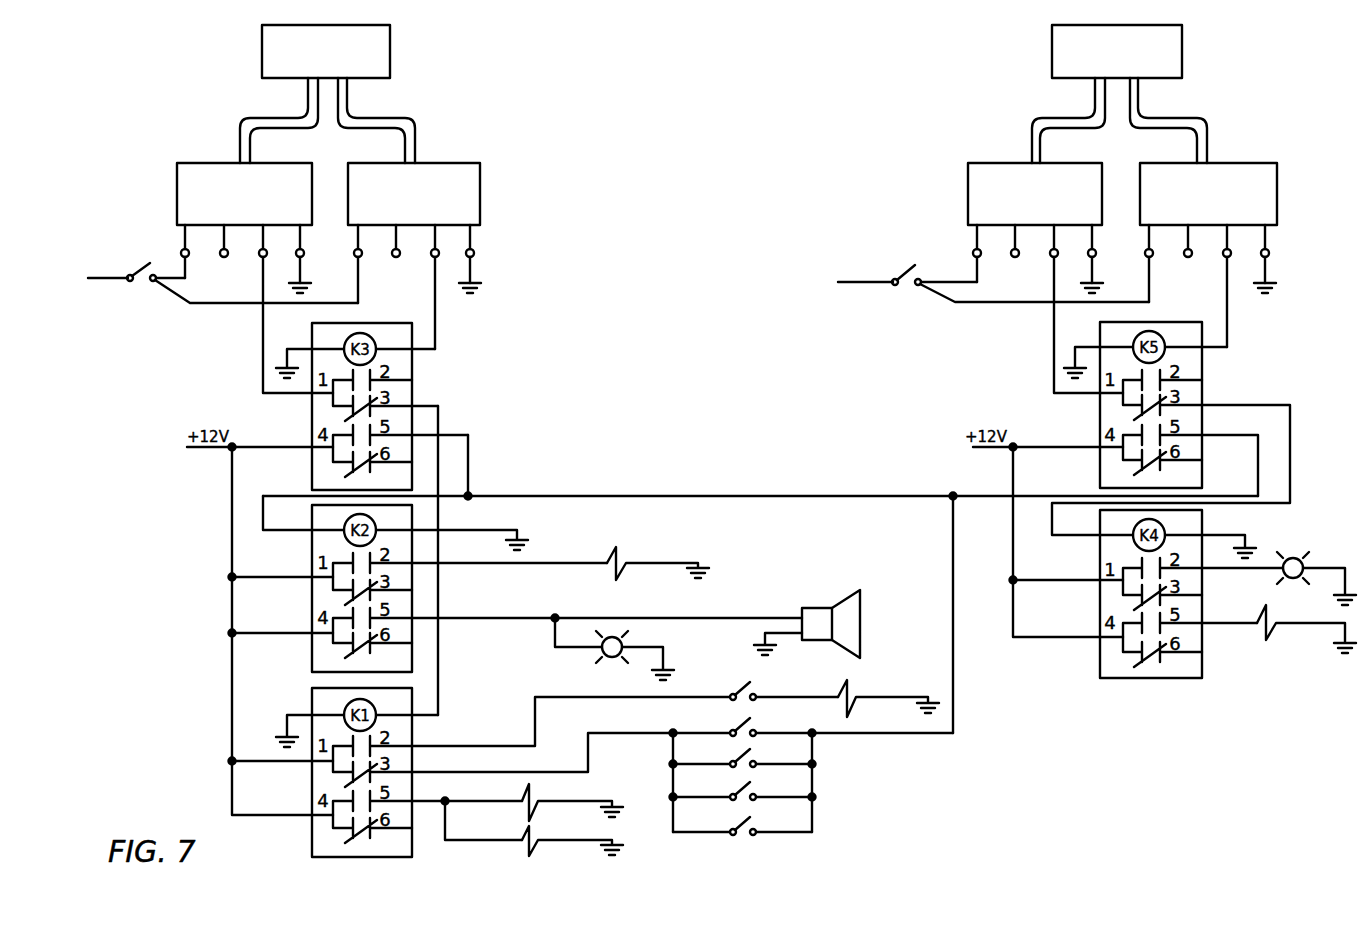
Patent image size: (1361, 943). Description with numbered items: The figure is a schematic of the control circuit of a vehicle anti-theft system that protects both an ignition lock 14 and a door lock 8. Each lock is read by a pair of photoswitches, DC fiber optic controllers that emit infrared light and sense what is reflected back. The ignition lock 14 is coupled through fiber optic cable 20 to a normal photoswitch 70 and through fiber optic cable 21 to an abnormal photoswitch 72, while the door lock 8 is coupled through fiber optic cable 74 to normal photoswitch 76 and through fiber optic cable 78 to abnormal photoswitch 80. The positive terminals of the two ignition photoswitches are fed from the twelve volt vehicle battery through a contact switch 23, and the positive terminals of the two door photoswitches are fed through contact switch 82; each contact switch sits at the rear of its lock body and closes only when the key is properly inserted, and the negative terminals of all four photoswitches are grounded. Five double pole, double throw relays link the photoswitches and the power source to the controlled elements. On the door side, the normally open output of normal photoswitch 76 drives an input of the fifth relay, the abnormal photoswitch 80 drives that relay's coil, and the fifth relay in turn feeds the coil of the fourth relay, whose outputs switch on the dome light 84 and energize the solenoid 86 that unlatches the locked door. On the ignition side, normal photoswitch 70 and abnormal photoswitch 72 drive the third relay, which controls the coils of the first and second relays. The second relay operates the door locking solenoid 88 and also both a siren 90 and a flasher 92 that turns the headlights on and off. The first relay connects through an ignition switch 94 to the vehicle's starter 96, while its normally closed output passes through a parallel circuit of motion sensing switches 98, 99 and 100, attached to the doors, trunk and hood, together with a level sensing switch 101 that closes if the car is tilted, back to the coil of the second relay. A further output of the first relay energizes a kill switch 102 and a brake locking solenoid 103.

The door lock 8 is at (1052, 63).
The ignition lock 14 is at (390, 62).
The fiber optic cable 20 is at (256, 118).
The fiber optic cable 21 is at (413, 118).
The contact switch 23 is at (131, 283).
The normal photoswitch 70 is at (177, 182).
The abnormal photoswitch 72 is at (482, 188).
The fiber optic cable 74 is at (1032, 137).
The normal photoswitch 76 is at (968, 190).
The fiber optic cable 78 is at (1207, 137).
The abnormal photoswitch 80 is at (1277, 190).
The contact switch 82 is at (897, 285).
The dome light 84 is at (1305, 558).
The solenoid 86 is at (1272, 620).
The door locking solenoid 88 is at (640, 552).
The siren 90 is at (818, 606).
The flasher 92 is at (640, 642).
The ignition switch 94 is at (728, 702).
The starter 96 is at (846, 690).
The motion sensing switch 98 is at (733, 745).
The motion sensing switch 99 is at (733, 776).
The motion sensing switch 100 is at (733, 808).
The level sensing switch 101 is at (733, 840).
The kill switch 102 is at (524, 790).
The brake locking solenoid 103 is at (524, 831).